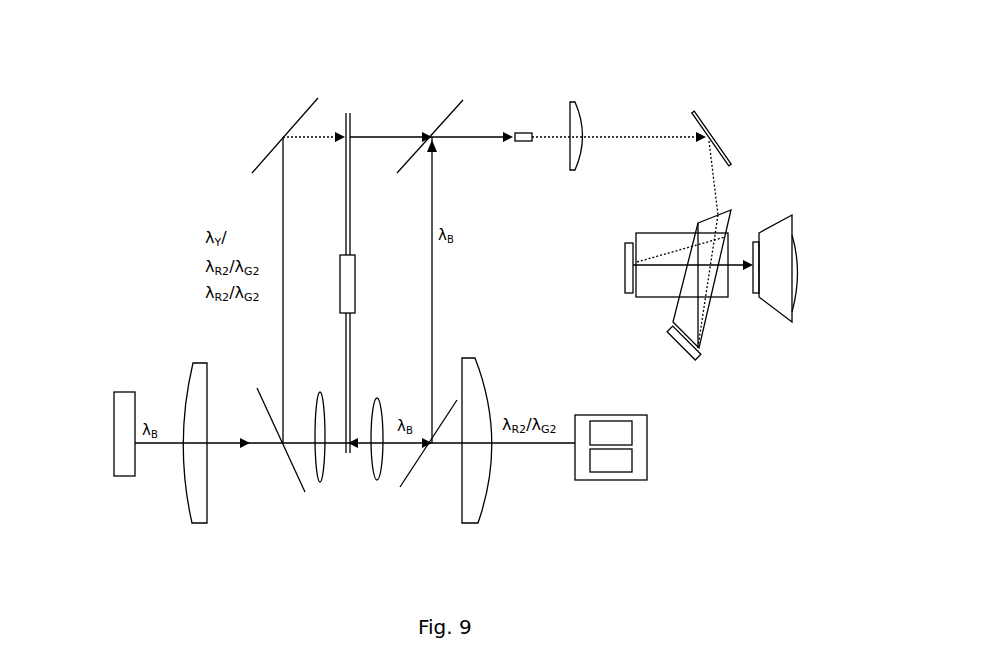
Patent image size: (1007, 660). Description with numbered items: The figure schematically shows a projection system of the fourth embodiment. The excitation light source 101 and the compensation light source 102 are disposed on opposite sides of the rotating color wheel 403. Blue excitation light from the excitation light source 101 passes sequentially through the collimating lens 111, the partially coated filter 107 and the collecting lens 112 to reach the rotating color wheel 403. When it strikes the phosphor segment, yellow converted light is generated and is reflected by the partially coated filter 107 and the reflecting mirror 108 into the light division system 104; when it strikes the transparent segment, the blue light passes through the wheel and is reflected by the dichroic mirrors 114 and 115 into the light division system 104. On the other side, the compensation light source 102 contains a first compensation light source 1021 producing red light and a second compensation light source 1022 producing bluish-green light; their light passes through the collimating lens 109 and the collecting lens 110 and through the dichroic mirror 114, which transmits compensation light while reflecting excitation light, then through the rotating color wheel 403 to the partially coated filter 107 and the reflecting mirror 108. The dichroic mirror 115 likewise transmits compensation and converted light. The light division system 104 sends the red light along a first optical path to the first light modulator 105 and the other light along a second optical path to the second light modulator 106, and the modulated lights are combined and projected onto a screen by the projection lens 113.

The excitation light source 101 is at (123, 428).
The collimating lens 111 is at (189, 506).
The partially coated filter 107 is at (297, 473).
The collecting lens 112 is at (320, 478).
The rotating color wheel 403 is at (348, 117).
The collecting lens 110 is at (380, 477).
The dichroic mirror 114 is at (403, 487).
The collimating lens 109 is at (472, 500).
The compensation light source 102 is at (642, 487).
The first compensation light source 1021 is at (611, 433).
The second compensation light source 1022 is at (611, 460).
The reflecting mirror 108 is at (297, 122).
The dichroic mirror 115 is at (447, 107).
The first light modulator 105 is at (628, 290).
The light division system 104 is at (715, 285).
The second light modulator 106 is at (690, 355).
The projection lens 113 is at (783, 285).